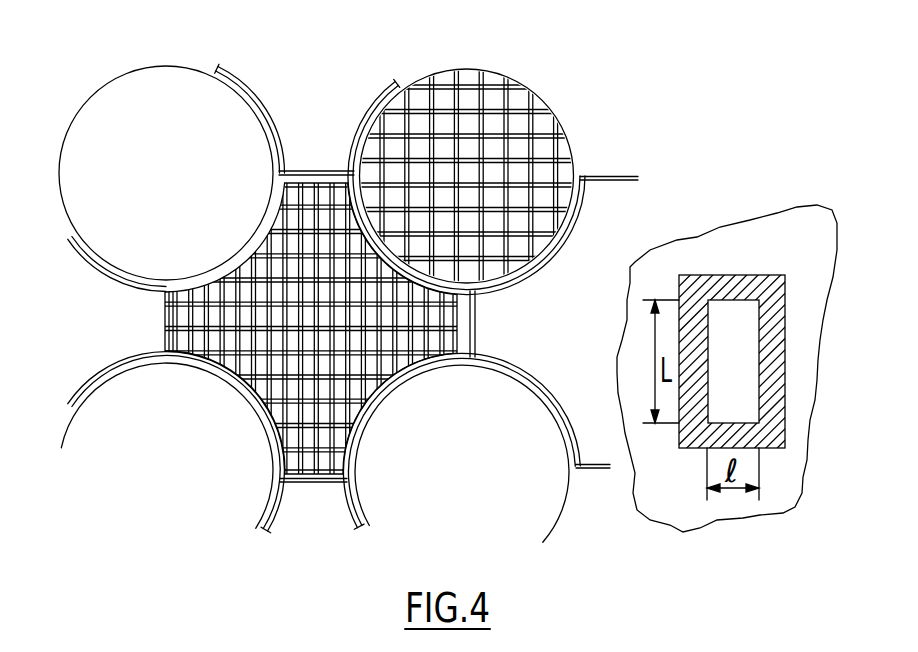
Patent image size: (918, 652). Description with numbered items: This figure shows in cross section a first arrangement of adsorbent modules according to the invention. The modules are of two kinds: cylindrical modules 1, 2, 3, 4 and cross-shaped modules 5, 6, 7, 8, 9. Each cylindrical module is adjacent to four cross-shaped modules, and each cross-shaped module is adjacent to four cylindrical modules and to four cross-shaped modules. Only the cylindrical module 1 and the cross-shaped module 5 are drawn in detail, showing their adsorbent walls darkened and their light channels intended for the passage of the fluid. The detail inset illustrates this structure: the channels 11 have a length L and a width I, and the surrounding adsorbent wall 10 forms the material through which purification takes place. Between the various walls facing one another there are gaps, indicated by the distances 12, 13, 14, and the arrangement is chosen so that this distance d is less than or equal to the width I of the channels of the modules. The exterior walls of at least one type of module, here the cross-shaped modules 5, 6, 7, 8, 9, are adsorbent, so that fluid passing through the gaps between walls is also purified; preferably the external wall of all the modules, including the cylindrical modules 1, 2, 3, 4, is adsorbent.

The cylindrical module 1 is at (515, 118).
The cylindrical module 2 is at (178, 104).
The cylindrical module 3 is at (481, 418).
The cylindrical module 4 is at (110, 424).
The cross-shaped module 5 is at (441, 314).
The cross-shaped module 6 is at (600, 228).
The cross-shaped module 7 is at (303, 493).
The cross-shaped module 8 is at (105, 305).
The cross-shaped module 9 is at (290, 113).
The adsorbent wall 10 is at (712, 283).
The channel 11 is at (732, 330).
The distance between facing walls 12 is at (387, 393).
The distance between facing walls 13 is at (302, 173).
The distance between facing walls 14 is at (248, 397).